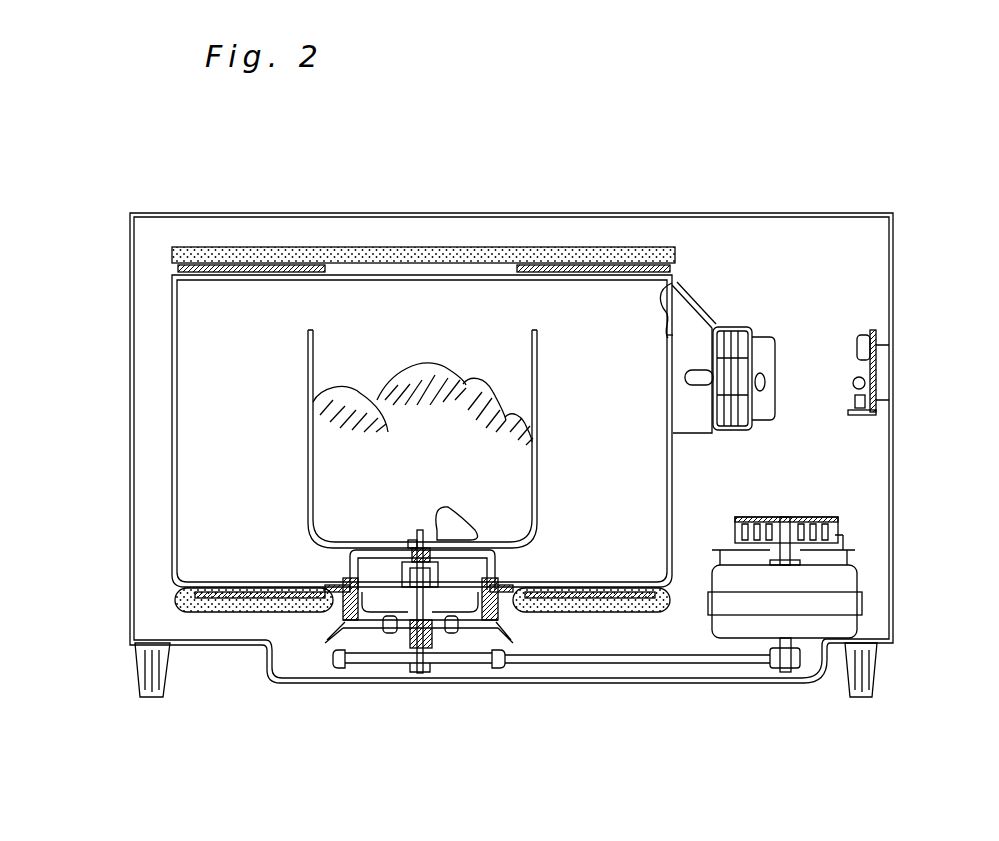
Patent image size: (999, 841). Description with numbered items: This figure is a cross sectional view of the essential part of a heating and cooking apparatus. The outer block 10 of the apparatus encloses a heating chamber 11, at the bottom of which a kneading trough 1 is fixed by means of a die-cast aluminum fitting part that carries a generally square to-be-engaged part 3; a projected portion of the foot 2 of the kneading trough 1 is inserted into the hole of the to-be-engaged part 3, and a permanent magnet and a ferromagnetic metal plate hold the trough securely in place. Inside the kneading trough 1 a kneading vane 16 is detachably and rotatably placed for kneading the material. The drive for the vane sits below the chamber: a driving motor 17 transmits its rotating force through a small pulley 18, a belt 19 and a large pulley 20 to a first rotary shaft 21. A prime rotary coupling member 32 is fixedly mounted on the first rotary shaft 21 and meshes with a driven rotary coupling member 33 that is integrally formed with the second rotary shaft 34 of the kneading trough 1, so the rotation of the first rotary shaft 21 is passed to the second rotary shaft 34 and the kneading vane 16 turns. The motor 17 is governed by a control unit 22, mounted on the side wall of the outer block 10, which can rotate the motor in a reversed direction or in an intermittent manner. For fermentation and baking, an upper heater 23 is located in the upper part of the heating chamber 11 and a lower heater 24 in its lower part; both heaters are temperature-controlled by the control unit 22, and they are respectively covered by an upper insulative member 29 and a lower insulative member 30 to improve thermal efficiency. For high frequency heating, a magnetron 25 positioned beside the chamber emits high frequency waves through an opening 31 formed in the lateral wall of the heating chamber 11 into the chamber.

The kneading trough 1 is at (310, 432).
The foot 2 is at (350, 567).
The to-be-engaged part 3 is at (500, 580).
The outer block 10 is at (516, 213).
The heating chamber 11 is at (200, 355).
The kneading vane 16 is at (460, 518).
The driving motor 17 is at (858, 573).
The small pulley 18 is at (793, 672).
The belt 19 is at (620, 665).
The large pulley 20 is at (465, 662).
The first rotary shaft 21 is at (415, 665).
The control unit 22 is at (876, 333).
The upper heater 23 is at (266, 258).
The lower heater 24 is at (255, 597).
The magnetron 25 is at (775, 337).
The upper insulative member 29 is at (410, 262).
The lower insulative member 30 is at (292, 608).
The opening 31 is at (660, 300).
The prime rotary coupling member 32 is at (442, 582).
The driven rotary coupling member 33 is at (440, 568).
The second rotary shaft 34 is at (412, 532).